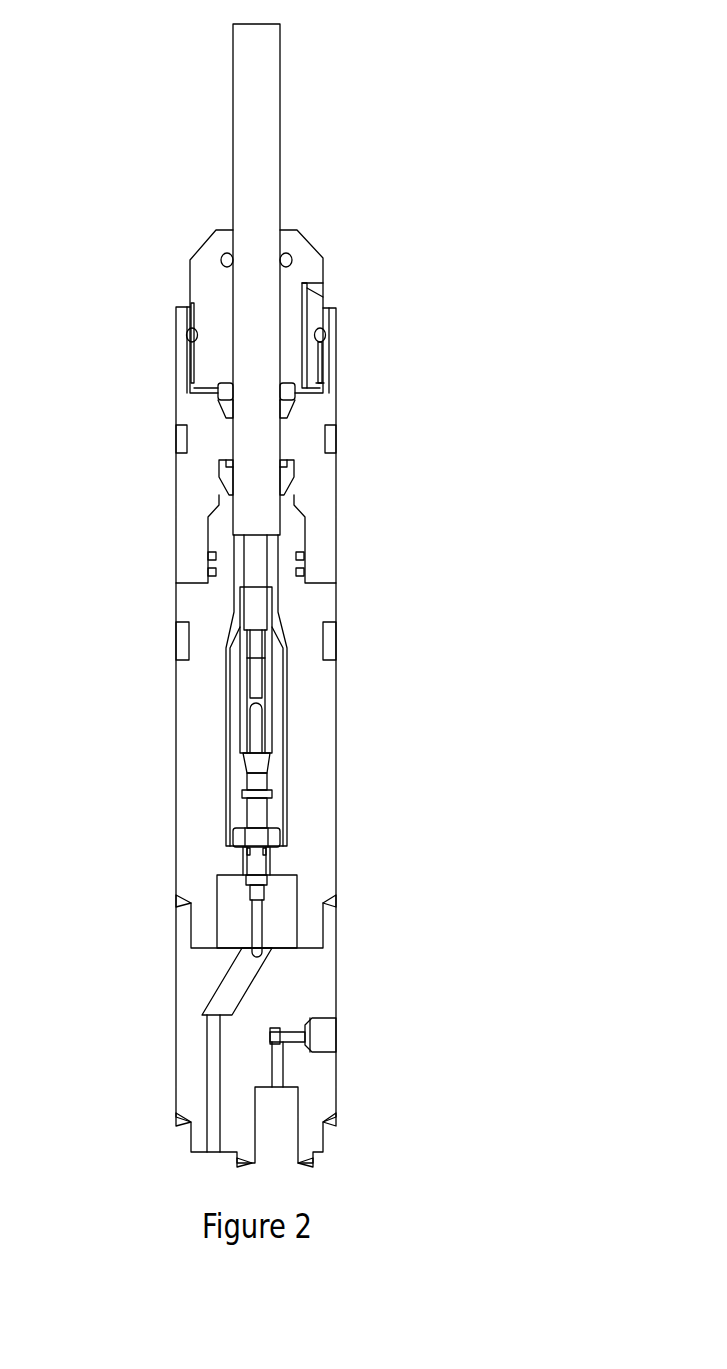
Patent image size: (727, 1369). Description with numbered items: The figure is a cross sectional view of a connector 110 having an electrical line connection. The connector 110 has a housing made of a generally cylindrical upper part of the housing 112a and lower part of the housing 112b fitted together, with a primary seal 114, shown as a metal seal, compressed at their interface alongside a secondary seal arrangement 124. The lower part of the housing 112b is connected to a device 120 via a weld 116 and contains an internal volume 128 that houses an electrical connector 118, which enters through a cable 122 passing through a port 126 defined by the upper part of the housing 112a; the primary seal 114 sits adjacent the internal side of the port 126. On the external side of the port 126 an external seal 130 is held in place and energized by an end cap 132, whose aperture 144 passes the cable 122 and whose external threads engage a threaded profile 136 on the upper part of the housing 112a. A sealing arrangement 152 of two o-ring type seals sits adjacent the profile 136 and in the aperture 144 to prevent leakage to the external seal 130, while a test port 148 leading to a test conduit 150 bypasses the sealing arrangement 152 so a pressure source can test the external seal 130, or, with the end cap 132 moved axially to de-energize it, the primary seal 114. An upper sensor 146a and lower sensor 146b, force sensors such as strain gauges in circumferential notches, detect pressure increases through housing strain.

The connector 110 is at (479, 258).
The cable 122 is at (273, 67).
The port 126 is at (277, 430).
The end cap 132 is at (312, 241).
The aperture 144 is at (229, 240).
The test port 148 is at (320, 285).
The test conduit 150 is at (303, 318).
The sealing arrangement 152 is at (221, 261).
The profile 136 is at (323, 360).
The external seal 130 is at (220, 407).
The upper part of the housing 112a is at (328, 482).
The lower part of the housing 112b is at (337, 730).
The upper sensor 146a is at (178, 433).
The lower sensor 146b is at (180, 642).
The primary seal 114 is at (220, 475).
The secondary seal arrangement 124 is at (208, 557).
The internal volume 128 is at (283, 697).
The electrical connector 118 is at (260, 778).
The weld 116 is at (324, 902).
The device 120 is at (322, 982).